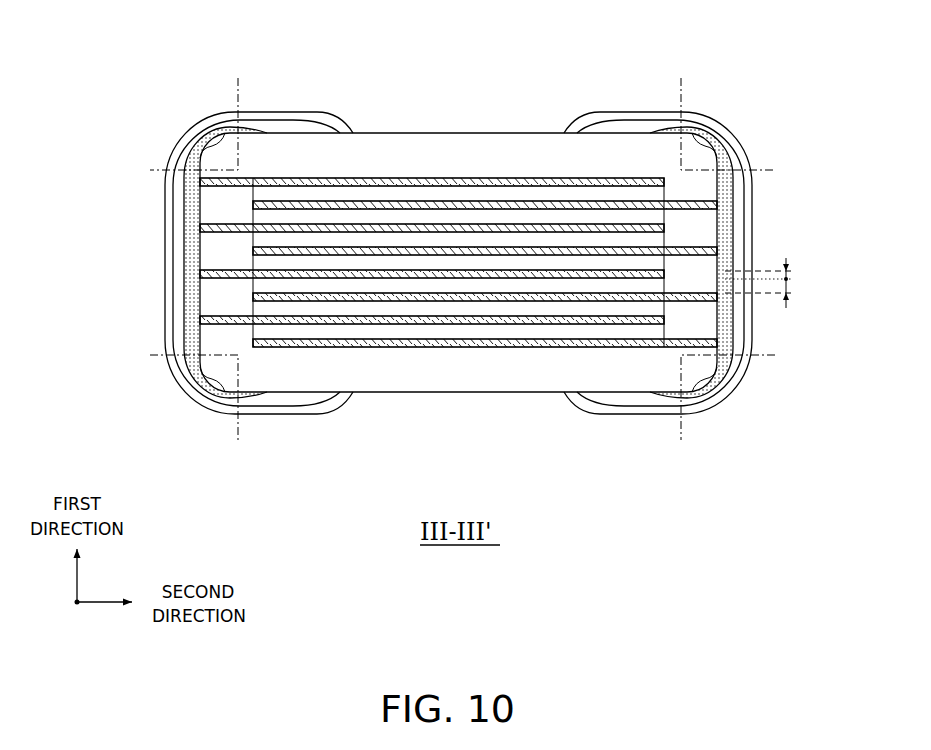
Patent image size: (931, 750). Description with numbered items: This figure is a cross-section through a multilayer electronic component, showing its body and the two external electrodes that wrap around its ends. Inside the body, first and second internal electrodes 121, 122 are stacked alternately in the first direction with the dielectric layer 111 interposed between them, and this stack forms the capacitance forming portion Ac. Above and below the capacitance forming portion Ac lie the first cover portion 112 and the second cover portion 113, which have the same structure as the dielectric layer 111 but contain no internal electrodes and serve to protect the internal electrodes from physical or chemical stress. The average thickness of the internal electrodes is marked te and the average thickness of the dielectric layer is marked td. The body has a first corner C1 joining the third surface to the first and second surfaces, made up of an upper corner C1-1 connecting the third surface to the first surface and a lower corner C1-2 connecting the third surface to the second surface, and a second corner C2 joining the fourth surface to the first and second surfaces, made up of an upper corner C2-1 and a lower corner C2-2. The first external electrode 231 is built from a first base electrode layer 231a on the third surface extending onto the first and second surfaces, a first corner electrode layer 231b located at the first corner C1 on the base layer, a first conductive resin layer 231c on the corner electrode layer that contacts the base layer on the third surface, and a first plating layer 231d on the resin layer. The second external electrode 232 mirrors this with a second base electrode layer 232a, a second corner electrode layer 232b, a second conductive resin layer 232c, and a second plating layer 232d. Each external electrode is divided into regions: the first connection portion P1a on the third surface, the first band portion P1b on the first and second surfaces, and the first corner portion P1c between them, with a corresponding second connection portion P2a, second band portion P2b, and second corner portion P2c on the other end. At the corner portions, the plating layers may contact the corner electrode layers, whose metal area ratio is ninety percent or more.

The dielectric layer 111 is at (480, 198).
The first cover portion 112 is at (510, 153).
The second cover portion 113 is at (428, 377).
The first internal electrode 121 is at (420, 183).
The second internal electrode 122 is at (450, 208).
The capacitance forming portion Ac is at (493, 350).
The first external electrode 231 is at (195, 263).
The first base electrode layer 231a is at (85, 128).
The first corner electrode layer 231b is at (186, 180).
The first conductive resin layer 231c is at (180, 214).
The first plating layer 231d is at (193, 135).
The second external electrode 232 is at (722, 263).
The second base electrode layer 232a is at (735, 143).
The second corner electrode layer 232b is at (691, 262).
The second conductive resin layer 232c is at (660, 263).
The second plating layer 232d is at (658, 263).
The first connection portion P1a is at (162, 326).
The first band portion P1b is at (277, 106).
The first corner portion P1c is at (192, 120).
The second connection portion P2a is at (758, 326).
The second band portion P2b is at (642, 106).
The second corner portion P2c is at (727, 124).
The first corner C1 is at (590, 570).
The 1-1 corner C1-1 is at (208, 110).
The 1-2 corner C1-2 is at (206, 410).
The second corner C2 is at (728, 570).
The 2-1 corner C2-1 is at (708, 120).
The 2-2 corner C2-2 is at (708, 410).
The average thickness of the internal electrodes te is at (770, 275).
The average thickness of the dielectric layer td is at (771, 293).